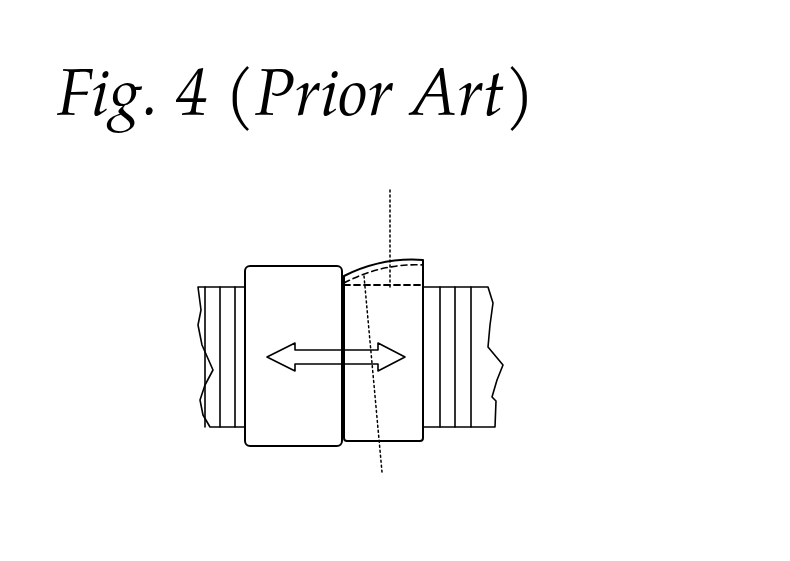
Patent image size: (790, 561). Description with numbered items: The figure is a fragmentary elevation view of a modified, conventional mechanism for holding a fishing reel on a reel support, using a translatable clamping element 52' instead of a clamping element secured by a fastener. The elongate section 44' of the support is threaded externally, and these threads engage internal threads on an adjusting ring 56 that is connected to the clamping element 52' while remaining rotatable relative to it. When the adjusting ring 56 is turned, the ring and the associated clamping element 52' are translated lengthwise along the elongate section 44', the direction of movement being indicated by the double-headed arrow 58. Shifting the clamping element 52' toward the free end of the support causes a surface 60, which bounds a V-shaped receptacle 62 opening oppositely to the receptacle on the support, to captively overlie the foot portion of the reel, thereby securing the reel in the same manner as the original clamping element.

The elongate section 44' is at (379, 333).
The translatable clamping element 52' is at (417, 308).
The adjusting ring 56 is at (280, 282).
The double-headed arrow 58 is at (315, 353).
The surface 60 is at (382, 472).
The V-shaped receptacle 62 is at (390, 190).